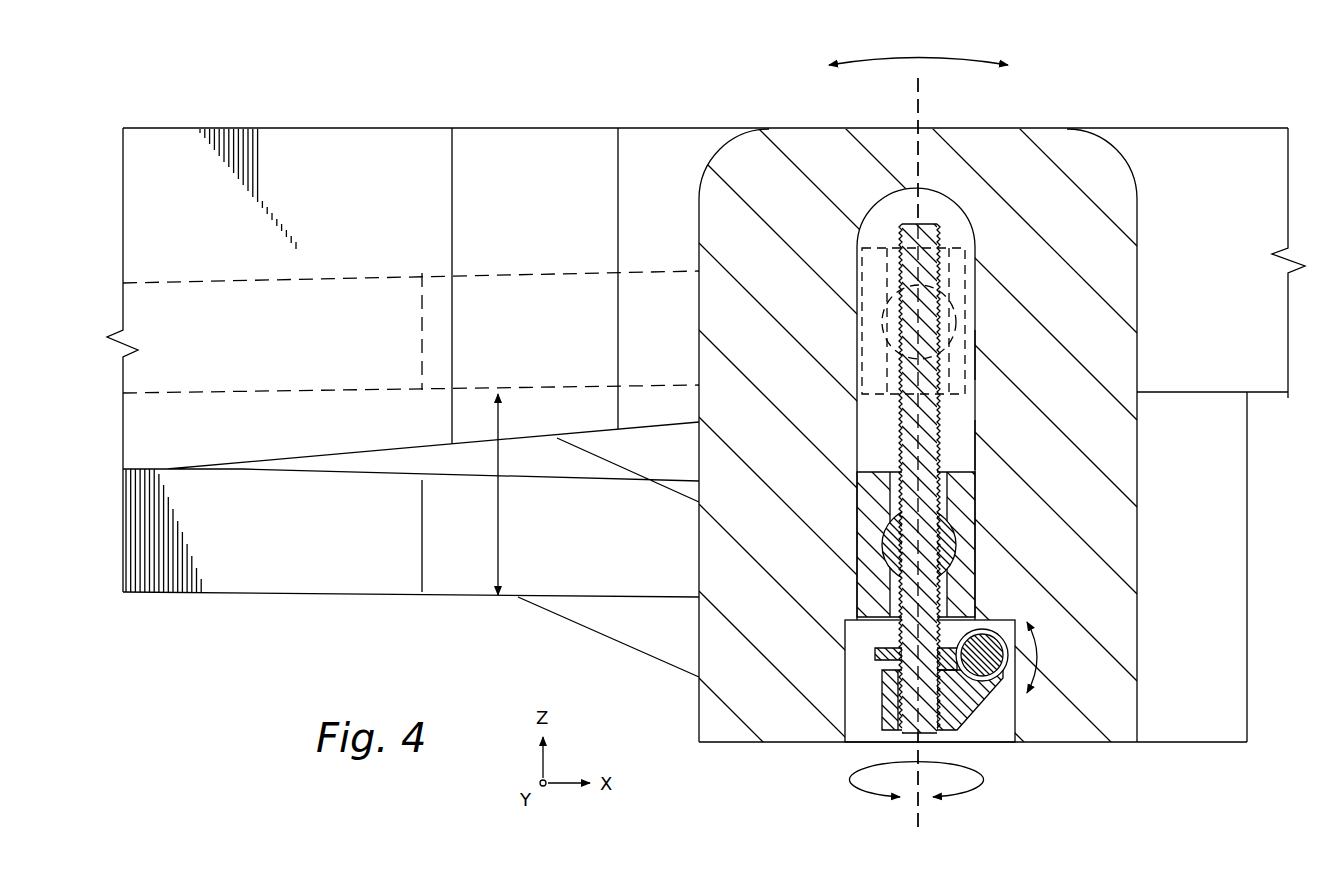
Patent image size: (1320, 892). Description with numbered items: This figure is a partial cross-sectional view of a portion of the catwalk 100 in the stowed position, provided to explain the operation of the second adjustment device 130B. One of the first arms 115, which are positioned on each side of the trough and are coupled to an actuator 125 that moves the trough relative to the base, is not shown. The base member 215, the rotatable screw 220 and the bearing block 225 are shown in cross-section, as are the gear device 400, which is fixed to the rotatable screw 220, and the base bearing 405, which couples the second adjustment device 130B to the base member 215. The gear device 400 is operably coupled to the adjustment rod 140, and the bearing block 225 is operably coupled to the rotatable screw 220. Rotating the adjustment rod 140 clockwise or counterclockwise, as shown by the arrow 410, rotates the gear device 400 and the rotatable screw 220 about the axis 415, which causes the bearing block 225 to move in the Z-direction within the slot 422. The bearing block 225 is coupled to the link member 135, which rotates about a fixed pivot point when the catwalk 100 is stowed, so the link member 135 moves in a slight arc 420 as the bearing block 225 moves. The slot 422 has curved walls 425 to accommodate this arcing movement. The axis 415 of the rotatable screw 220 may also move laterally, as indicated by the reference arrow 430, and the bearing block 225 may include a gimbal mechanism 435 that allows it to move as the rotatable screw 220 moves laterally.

The catwalk 100 is at (300, 78).
The first arm 115 is at (1197, 128).
The actuator 125 is at (632, 643).
The link member 135 is at (322, 395).
The adjustment rod 140 is at (985, 642).
The second adjustment device 130B is at (856, 753).
The base member 215 is at (1130, 530).
The rotatable screw 220 is at (905, 424).
The bearing block 225 is at (880, 502).
The gear device 400 is at (875, 656).
The base bearing 405 is at (885, 688).
The arrow 410 is at (1046, 657).
The axis 415 is at (918, 98).
The slight arc 420 is at (500, 508).
The slot 422 is at (982, 366).
The curved walls 425 is at (982, 454).
The reference arrow 430 is at (937, 61).
The gimbal mechanism 435 is at (950, 540).